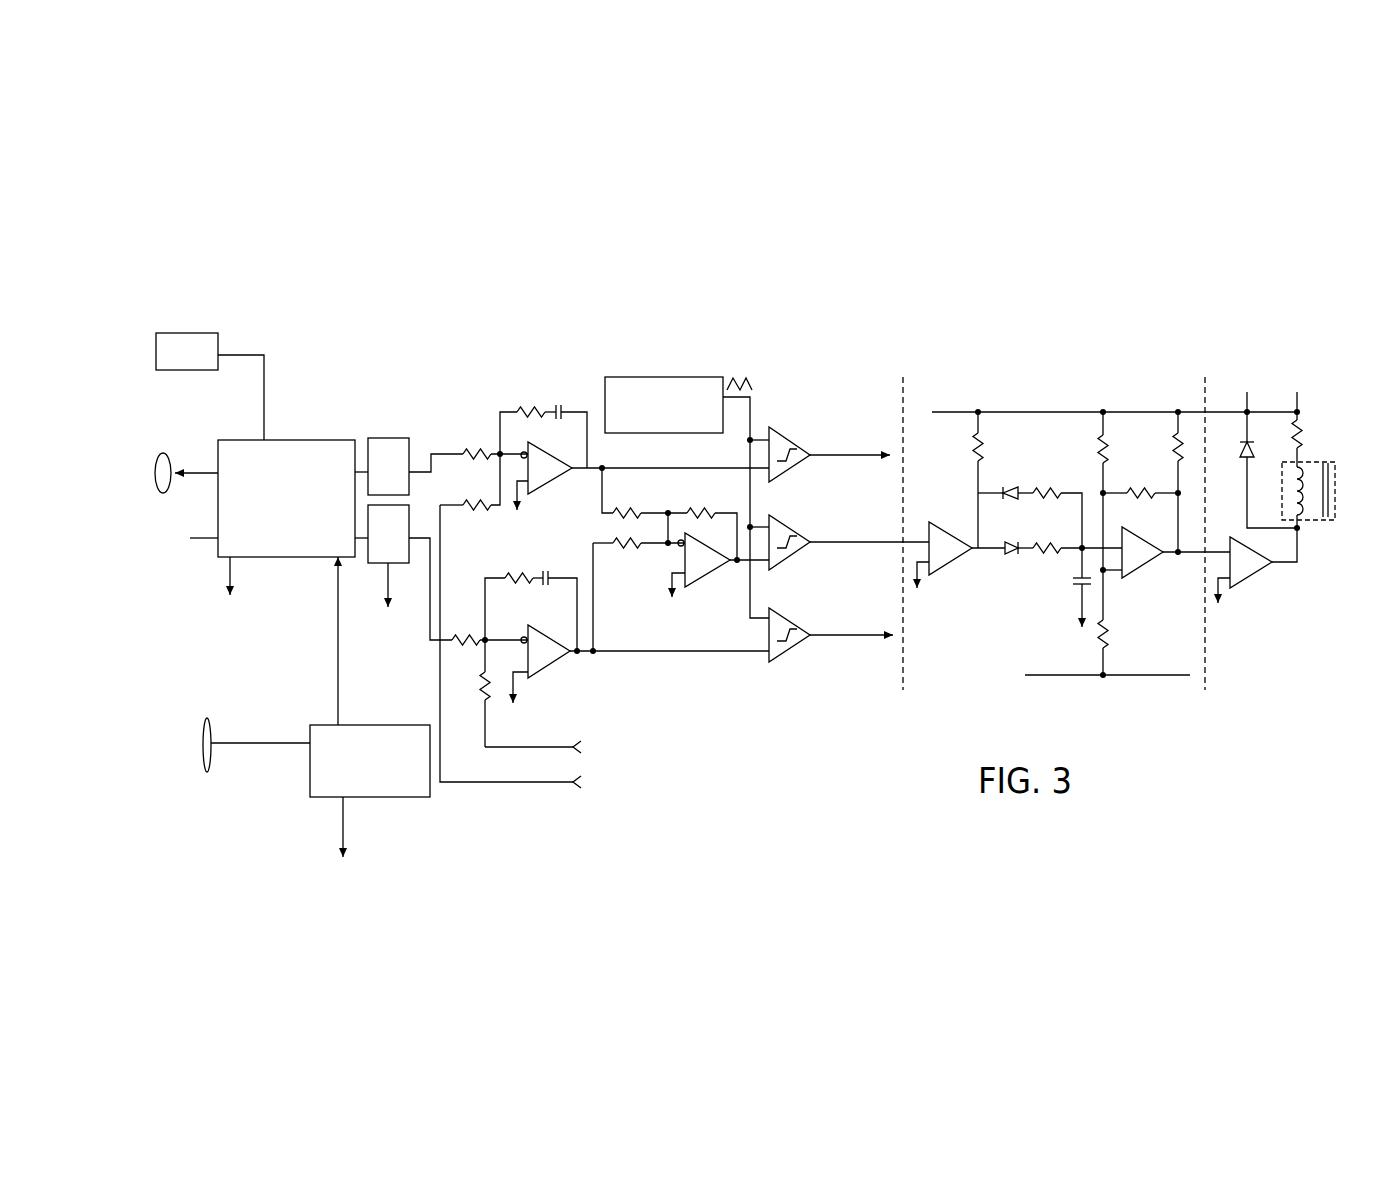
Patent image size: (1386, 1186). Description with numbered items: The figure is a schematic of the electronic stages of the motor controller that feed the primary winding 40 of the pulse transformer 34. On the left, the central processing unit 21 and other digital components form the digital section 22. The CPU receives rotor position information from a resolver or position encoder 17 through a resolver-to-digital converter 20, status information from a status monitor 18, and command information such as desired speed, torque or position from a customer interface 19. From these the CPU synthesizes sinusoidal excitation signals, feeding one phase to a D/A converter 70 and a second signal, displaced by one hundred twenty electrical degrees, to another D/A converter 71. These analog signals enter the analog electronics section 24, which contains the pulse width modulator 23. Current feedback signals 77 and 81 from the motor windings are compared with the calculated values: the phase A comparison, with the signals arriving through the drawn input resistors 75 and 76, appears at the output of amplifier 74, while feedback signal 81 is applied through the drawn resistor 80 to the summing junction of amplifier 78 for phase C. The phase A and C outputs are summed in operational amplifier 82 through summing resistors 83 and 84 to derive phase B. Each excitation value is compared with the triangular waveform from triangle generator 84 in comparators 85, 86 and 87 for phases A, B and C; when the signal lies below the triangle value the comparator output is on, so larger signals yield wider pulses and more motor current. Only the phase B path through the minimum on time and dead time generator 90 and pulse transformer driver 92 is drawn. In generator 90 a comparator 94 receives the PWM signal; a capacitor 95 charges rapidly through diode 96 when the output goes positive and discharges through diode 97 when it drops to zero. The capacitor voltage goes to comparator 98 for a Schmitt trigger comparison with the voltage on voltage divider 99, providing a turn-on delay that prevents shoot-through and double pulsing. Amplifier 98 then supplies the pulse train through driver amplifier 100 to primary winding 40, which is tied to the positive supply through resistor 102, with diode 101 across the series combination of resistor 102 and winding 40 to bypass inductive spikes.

The resolver or position encoder 17 is at (223, 745).
The status monitor 18 is at (195, 371).
The customer interface 19 is at (208, 475).
The resolver-to-digital converter 20 is at (383, 725).
The central processing unit 21 is at (330, 440).
The digital section 22 is at (201, 626).
The pulse width modulator 23 is at (801, 392).
The analog electronics section 24 is at (601, 703).
The pulse transformer 34 is at (1289, 489).
The primary winding 40 is at (1300, 531).
The digital-to-analog converter 70 is at (370, 438).
The digital-to-analog converter 71 is at (412, 531).
The amplifier 74 is at (539, 446).
The input resistor 75 is at (476, 449).
The feedback input resistor 76 is at (478, 500).
The voltage feedback signal 77 is at (498, 782).
The amplifier 78 is at (545, 633).
The resistor 80 is at (480, 692).
The voltage feedback signal 81 is at (500, 747).
The operational amplifier 82 is at (709, 577).
The summing resistor 83 is at (622, 511).
The triangle generator 84 is at (633, 377).
The comparator 85 is at (791, 436).
The comparator 86 is at (791, 526).
The comparator 87 is at (791, 618).
The minimum ON time and dead time generator 90 is at (1154, 398).
The pulse transformer driver 92 is at (1305, 390).
The comparator 94 is at (952, 533).
The capacitor 95 is at (1073, 580).
The diode 96 is at (1009, 541).
The diode 97 is at (1012, 486).
The comparator 98 is at (1144, 573).
The voltage divider 99 is at (1103, 600).
The amplifier 100 is at (1251, 578).
The diode 101 is at (1240, 452).
The resistor 102 is at (1301, 434).